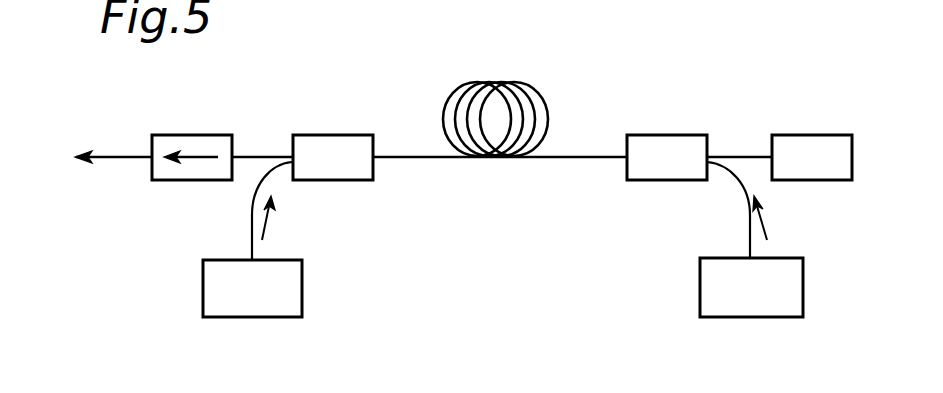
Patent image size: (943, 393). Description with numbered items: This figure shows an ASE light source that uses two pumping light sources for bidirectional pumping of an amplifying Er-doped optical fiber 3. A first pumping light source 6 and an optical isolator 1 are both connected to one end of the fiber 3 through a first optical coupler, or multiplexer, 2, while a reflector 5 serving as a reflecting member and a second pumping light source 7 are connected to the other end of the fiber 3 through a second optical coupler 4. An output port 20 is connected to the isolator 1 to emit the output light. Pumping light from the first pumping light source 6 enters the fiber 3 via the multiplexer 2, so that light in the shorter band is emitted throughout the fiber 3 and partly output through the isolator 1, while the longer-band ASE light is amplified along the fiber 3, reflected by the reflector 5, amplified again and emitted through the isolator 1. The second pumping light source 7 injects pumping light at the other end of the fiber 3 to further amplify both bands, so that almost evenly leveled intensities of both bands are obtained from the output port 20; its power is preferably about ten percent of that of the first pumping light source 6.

The optical isolator 1 is at (188, 135).
The first optical coupler 2 is at (332, 134).
The amplifying Er-doped optical fiber 3 is at (532, 160).
The second optical coupler 4 is at (660, 135).
The reflector 5 is at (810, 135).
The first pumping light source 6 is at (302, 285).
The second pumping light source 7 is at (698, 292).
The output port 20 is at (113, 160).